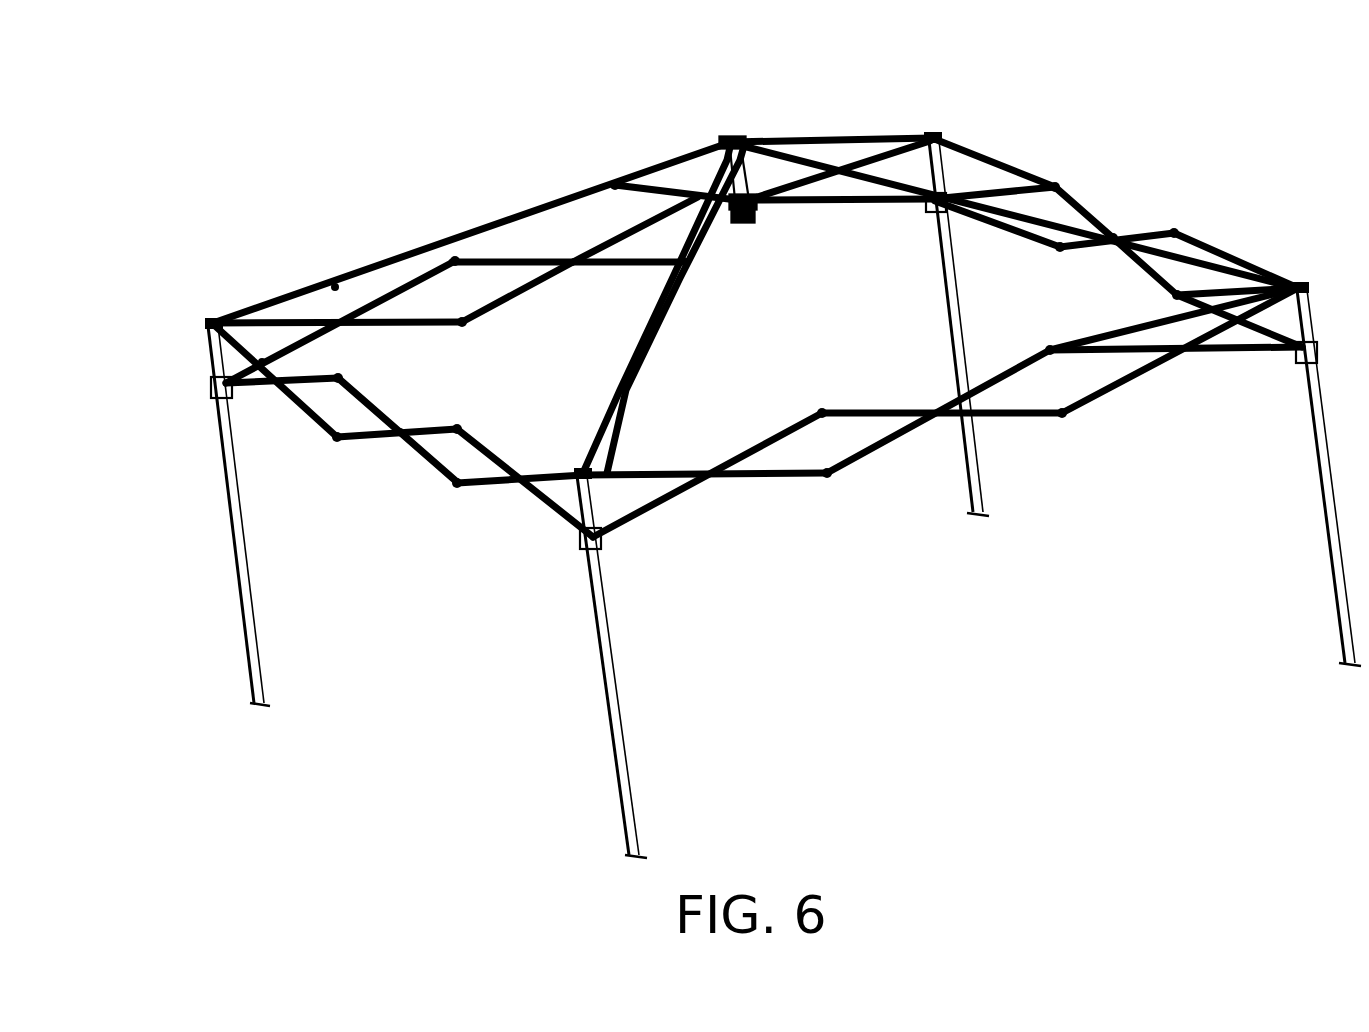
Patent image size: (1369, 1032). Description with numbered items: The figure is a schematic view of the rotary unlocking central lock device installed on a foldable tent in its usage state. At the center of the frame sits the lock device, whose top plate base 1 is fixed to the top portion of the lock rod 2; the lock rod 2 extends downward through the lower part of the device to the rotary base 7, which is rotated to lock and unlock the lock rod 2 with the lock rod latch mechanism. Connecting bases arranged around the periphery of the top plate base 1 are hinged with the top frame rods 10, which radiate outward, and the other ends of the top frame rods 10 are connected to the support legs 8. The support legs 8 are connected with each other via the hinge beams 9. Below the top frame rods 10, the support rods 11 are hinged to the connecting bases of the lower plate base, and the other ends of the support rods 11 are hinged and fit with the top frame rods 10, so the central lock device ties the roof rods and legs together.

The top plate base 1 is at (728, 139).
The lock rod 2 is at (747, 166).
The rotary base 7 is at (752, 233).
The support leg 8 is at (232, 548).
The hinge beam 9 is at (740, 482).
The top frame rod 10 is at (537, 210).
The support rod 11 is at (727, 222).